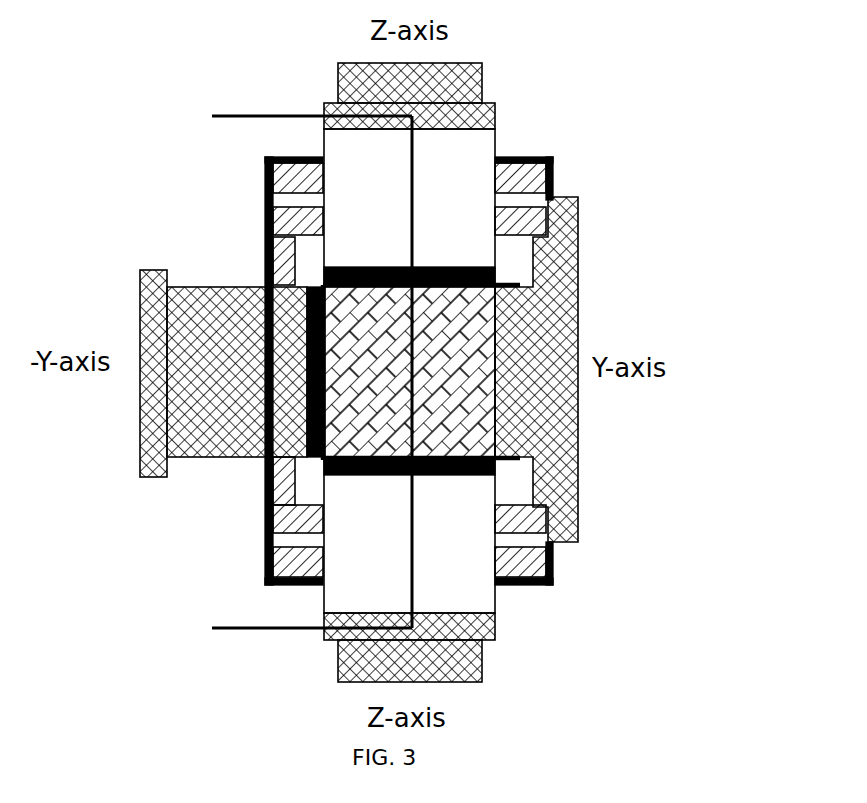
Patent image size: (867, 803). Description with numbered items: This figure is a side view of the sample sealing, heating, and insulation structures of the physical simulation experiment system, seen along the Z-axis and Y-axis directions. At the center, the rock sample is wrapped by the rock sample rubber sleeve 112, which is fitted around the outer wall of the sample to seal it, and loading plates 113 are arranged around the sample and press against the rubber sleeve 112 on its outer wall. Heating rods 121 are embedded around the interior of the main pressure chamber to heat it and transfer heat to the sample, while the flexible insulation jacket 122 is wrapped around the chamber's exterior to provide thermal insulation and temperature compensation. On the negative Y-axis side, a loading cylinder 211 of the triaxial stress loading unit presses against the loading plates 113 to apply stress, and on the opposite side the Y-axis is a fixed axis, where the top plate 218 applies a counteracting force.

The rock sample rubber sleeve 112 is at (508, 460).
The loading plates 113 is at (493, 278).
The heating rods 121 is at (273, 196).
The flexible insulation jacket 122 is at (553, 158).
The loading cylinders 211 is at (162, 477).
The top plate 218 is at (562, 408).